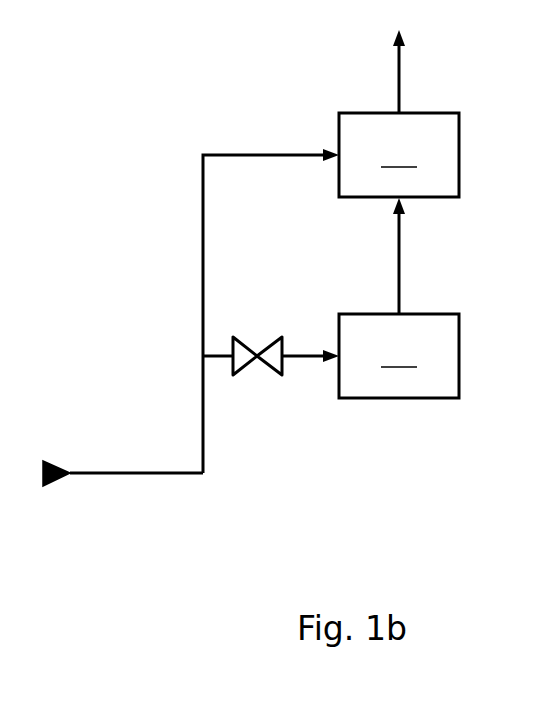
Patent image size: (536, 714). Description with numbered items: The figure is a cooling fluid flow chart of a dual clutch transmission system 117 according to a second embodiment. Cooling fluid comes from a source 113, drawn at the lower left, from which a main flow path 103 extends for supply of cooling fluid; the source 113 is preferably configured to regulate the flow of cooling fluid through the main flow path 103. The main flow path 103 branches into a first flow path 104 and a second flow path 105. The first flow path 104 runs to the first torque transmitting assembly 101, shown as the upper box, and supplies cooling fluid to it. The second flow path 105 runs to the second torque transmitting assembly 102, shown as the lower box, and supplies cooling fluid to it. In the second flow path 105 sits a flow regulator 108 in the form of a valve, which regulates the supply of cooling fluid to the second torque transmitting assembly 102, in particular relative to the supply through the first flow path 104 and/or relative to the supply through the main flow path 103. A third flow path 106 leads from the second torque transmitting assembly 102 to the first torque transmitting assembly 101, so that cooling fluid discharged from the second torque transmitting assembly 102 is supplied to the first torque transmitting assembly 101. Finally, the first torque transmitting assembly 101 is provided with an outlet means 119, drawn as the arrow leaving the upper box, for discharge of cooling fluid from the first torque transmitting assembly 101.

The first torque transmitting assembly 101 is at (399, 155).
The second torque transmitting assembly 102 is at (399, 356).
The main flow path 103 is at (163, 474).
The first flow path 104 is at (203, 202).
The second flow path 105 is at (303, 360).
The third flow path 106 is at (401, 268).
The flow regulator 108 is at (257, 348).
The source of cooling fluid 113 is at (58, 468).
The dual clutch transmission system 117 is at (166, 100).
The outlet means 119 is at (401, 82).